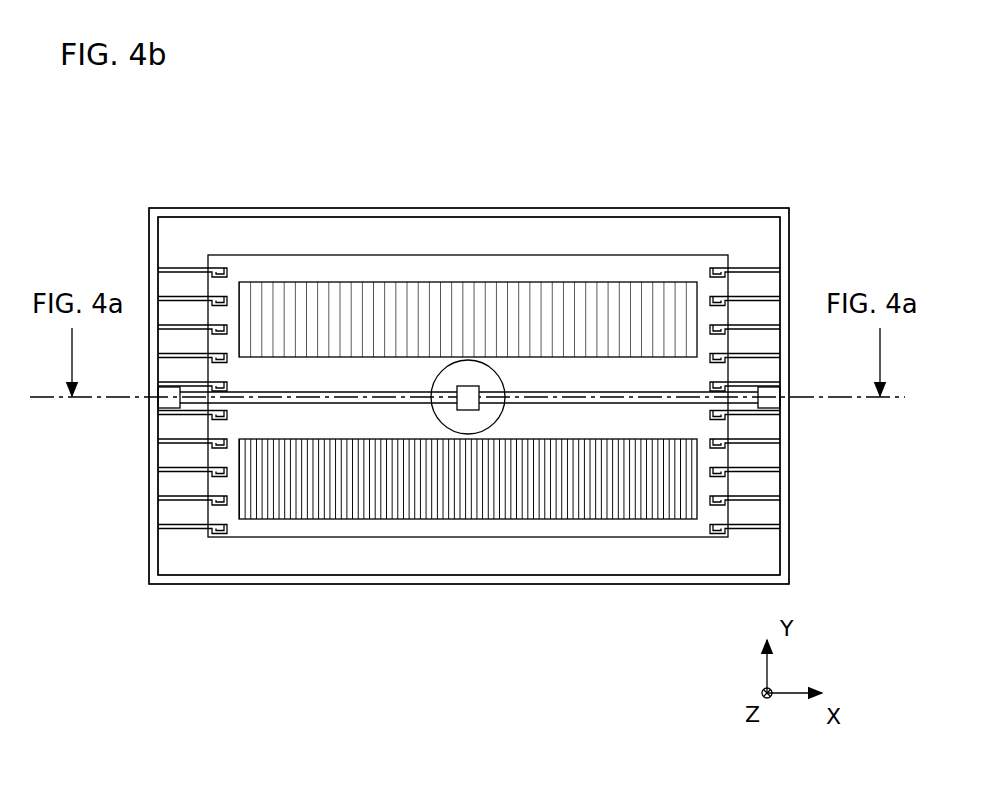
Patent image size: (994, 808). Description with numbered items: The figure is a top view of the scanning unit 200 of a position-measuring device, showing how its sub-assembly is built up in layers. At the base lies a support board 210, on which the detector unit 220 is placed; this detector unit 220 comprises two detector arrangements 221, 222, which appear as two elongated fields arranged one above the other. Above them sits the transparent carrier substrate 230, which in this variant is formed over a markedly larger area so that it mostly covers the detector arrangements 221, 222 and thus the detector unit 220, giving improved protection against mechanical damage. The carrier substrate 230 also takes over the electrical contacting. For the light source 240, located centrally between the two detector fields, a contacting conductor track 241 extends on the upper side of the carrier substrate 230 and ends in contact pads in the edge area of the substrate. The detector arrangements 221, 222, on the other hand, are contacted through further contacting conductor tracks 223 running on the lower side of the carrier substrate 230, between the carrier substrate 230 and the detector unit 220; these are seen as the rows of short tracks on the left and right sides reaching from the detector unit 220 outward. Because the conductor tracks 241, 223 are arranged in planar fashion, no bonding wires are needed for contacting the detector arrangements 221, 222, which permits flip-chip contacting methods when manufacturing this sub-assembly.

The scanning unit 200 is at (153, 598).
The support board 210 is at (750, 213).
The detector unit 220 is at (265, 525).
The detector arrangement 221 is at (597, 320).
The detector arrangement 222 is at (462, 495).
The contacting conductor tracks 223 is at (195, 268).
The carrier substrate 230 is at (372, 562).
The light source 240 is at (458, 387).
The contacting conductor track 241 is at (272, 392).